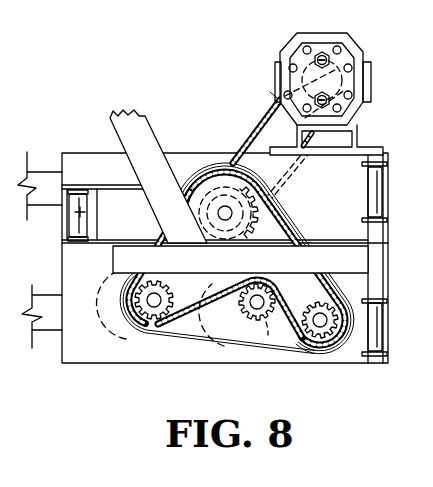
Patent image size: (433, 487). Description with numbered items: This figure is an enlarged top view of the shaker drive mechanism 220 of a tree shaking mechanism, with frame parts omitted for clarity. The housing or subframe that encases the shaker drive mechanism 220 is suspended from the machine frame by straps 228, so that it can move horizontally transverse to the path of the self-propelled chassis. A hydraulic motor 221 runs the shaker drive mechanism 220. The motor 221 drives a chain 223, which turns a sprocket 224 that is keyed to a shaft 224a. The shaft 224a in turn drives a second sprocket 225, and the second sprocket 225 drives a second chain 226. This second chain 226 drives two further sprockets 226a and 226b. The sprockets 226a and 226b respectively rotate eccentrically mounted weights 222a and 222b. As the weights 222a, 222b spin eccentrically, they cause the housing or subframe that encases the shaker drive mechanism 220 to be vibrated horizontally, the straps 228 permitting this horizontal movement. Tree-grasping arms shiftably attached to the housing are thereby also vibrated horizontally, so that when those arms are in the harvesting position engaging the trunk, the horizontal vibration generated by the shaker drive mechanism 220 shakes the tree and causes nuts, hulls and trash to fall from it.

The shaker drive mechanism 220 is at (177, 110).
The hydraulic motor 221 is at (358, 50).
The eccentrically mounted weight 222a is at (205, 331).
The eccentrically mounted weight 222b is at (110, 333).
The chain 223 is at (272, 106).
The sprocket 224 is at (274, 194).
The shaft 224a is at (222, 209).
The second sprocket 225 is at (240, 260).
The second chain 226 is at (288, 228).
The sprocket 226a is at (250, 320).
The sprocket 226b is at (172, 284).
The straps 228 is at (86, 214).